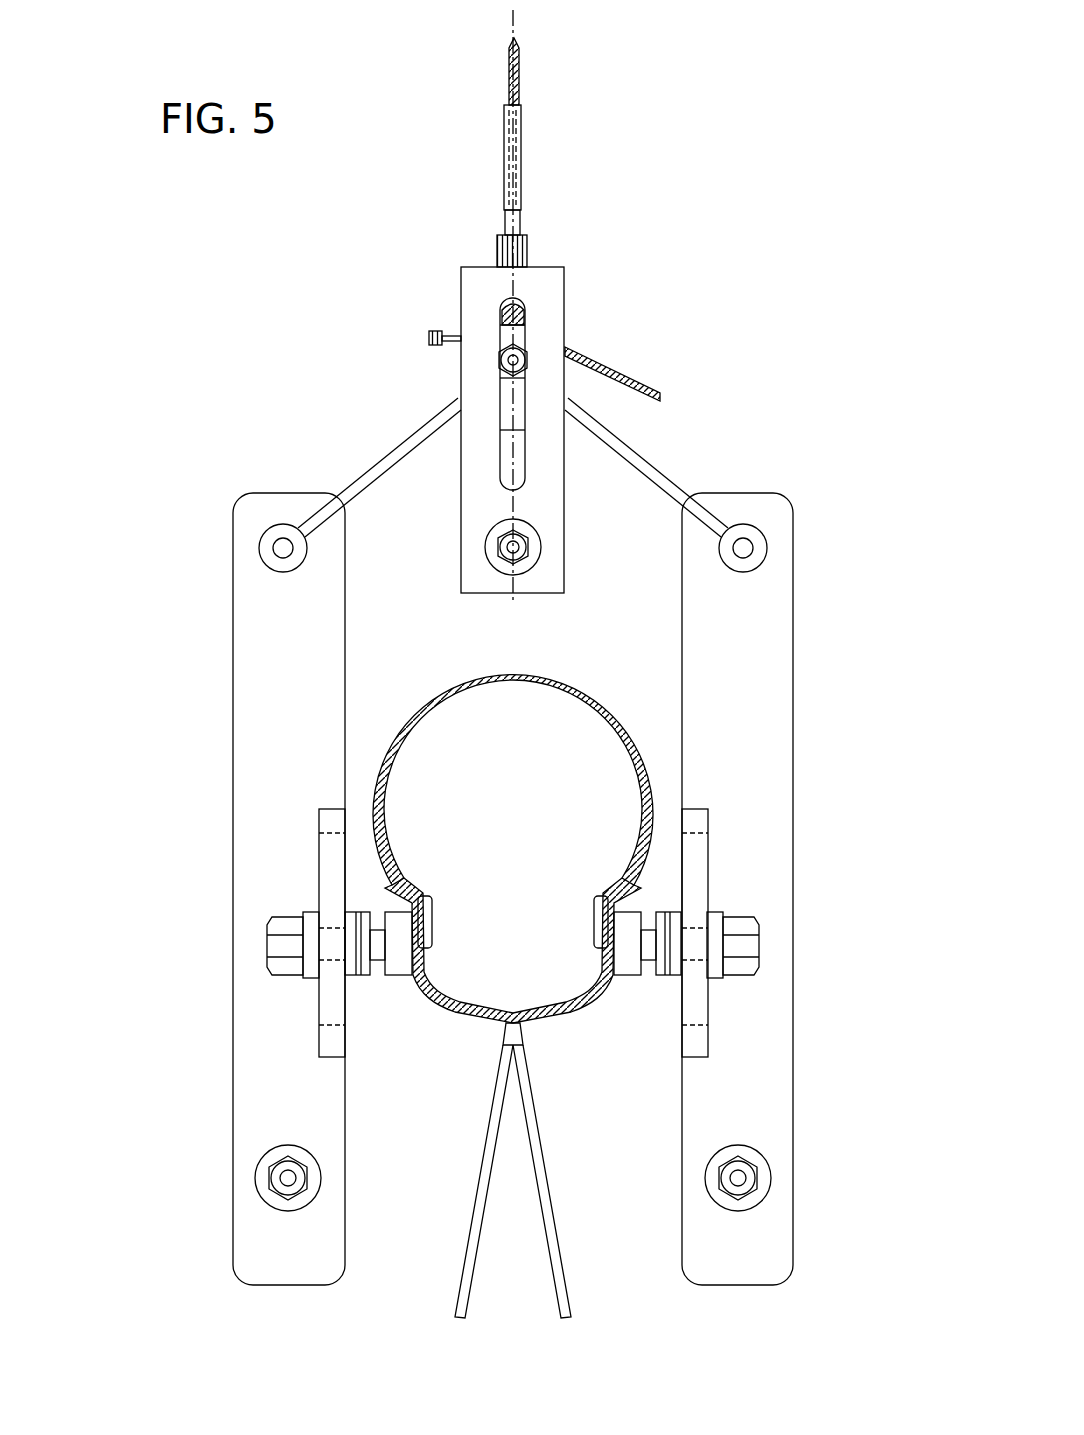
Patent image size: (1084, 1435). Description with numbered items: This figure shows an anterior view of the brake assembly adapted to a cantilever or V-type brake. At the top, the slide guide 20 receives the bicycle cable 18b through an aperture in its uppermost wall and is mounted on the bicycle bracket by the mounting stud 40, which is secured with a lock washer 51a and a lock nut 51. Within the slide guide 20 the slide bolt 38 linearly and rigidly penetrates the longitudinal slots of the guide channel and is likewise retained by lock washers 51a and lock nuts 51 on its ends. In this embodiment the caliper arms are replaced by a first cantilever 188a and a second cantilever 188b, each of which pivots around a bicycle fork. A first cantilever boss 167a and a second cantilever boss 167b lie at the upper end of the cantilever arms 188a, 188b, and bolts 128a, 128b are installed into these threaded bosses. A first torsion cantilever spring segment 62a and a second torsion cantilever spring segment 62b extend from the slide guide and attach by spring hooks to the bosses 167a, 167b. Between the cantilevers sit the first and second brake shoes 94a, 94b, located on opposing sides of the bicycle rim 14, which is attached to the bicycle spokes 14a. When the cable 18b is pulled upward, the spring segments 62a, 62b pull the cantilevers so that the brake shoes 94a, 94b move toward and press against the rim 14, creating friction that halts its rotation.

The bicycle cable 18b is at (518, 72).
The slide guide 20 is at (566, 288).
The slide bolt 38 is at (500, 360).
The mounting stud 40 is at (518, 572).
The first torsion cantilever spring segment 62a is at (383, 465).
The second torsion cantilever spring segment 62b is at (650, 464).
The bolt 128a is at (283, 548).
The bolt 128b is at (745, 546).
The first cantilever boss 167a is at (197, 517).
The second cantilever boss 167b is at (787, 511).
The first cantilever 188a is at (216, 874).
The second cantilever 188b is at (804, 867).
The first brake shoe 94a is at (395, 910).
The second brake shoe 94b is at (630, 908).
The bicycle rim 14 is at (573, 1015).
The bicycle spokes 14a is at (488, 1140).
The lock washer 51a is at (204, 1222).
The lock nut 51 is at (280, 1190).